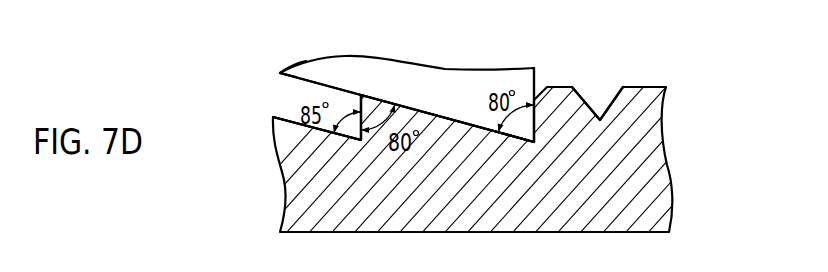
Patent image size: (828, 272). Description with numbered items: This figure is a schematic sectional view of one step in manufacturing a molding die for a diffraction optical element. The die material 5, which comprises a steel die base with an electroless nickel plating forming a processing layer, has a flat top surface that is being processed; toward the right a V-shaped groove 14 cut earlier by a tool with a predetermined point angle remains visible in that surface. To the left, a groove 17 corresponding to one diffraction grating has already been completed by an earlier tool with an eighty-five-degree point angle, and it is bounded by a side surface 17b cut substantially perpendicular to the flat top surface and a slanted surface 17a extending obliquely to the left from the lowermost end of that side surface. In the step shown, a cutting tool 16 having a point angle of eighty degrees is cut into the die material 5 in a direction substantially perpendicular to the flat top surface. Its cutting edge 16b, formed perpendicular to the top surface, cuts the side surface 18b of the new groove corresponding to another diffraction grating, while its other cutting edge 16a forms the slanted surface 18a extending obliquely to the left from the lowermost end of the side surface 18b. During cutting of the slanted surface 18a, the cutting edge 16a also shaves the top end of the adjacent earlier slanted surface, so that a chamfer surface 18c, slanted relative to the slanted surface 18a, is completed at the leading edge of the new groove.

The die material 5 is at (667, 183).
The V-shaped groove 14 is at (597, 100).
The cutting tool 16 is at (463, 88).
The cutting edge 16a is at (281, 72).
The cutting edge 16b is at (535, 82).
The groove 17 is at (290, 105).
The slanted surface 17a is at (277, 112).
The side surface 17b is at (340, 113).
The slanted surface 18a is at (441, 110).
The side surface 18b is at (530, 128).
The chamfer surface 18c is at (363, 96).